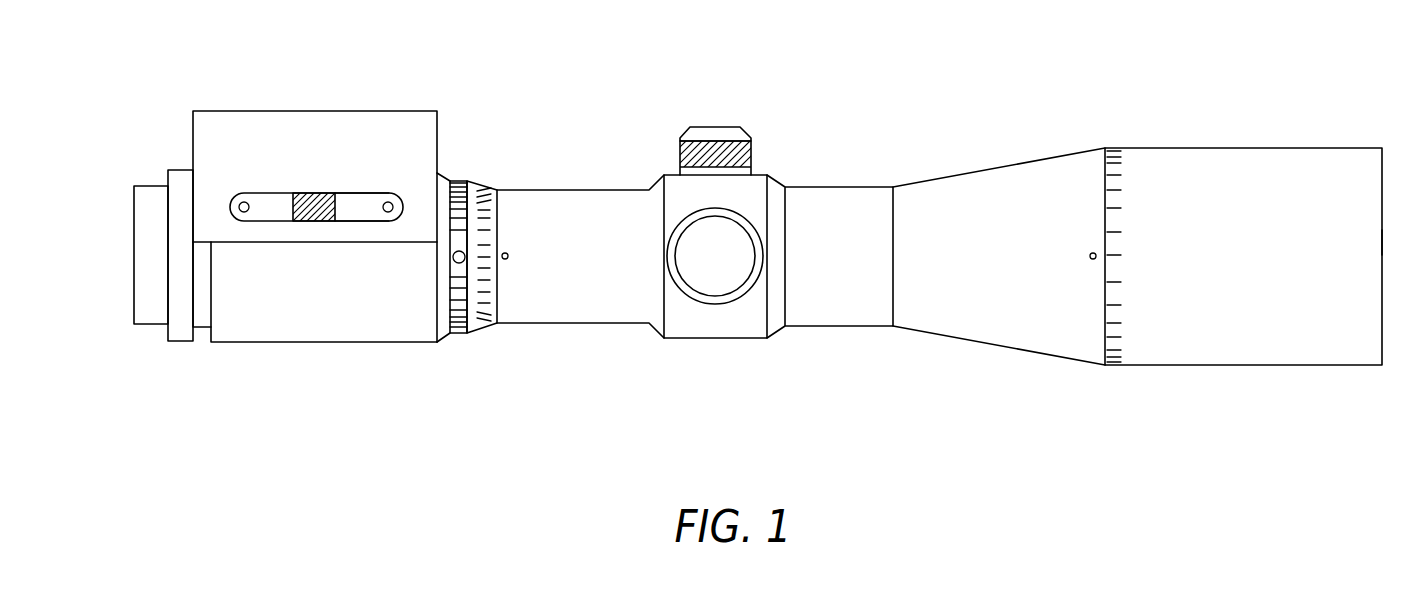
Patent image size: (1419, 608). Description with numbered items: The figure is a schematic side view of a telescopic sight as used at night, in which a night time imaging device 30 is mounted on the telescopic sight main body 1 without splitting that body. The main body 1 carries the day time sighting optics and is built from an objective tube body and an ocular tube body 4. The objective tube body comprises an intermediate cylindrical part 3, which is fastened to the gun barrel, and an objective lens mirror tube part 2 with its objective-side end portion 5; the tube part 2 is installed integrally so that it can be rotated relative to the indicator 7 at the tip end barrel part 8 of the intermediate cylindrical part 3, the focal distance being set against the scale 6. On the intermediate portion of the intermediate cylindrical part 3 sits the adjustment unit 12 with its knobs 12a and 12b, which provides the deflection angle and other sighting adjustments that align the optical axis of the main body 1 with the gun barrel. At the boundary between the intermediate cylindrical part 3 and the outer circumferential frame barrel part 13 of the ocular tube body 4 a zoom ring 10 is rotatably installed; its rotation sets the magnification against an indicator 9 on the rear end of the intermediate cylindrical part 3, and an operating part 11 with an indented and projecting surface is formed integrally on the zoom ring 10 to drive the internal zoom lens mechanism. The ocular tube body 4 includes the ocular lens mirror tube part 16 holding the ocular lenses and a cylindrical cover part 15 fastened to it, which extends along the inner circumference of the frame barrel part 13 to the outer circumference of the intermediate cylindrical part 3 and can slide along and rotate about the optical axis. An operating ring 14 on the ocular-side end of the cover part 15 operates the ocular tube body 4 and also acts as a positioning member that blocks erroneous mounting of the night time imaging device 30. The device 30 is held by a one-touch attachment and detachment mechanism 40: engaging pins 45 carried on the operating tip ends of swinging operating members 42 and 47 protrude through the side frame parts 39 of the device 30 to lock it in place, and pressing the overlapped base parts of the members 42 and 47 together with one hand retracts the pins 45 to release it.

The telescopic sight main body 1 is at (842, 132).
The objective lens mirror tube part 2 is at (1272, 148).
The intermediate cylindrical part 3 is at (563, 190).
The ocular tube body 4 is at (140, 162).
The objective end 5 is at (1382, 242).
The scale 6 is at (1107, 232).
The indicator 7 is at (1092, 259).
The tip end barrel part 8 is at (990, 169).
The indicator 9 is at (505, 259).
The zoom ring 10 is at (478, 324).
The operating part 11 is at (453, 180).
The adjustment turret 12 is at (748, 338).
The elevation adjustment knob 12a is at (717, 127).
The windage adjustment knob 12b is at (710, 298).
The outer circumferential frame barrel part 13 is at (320, 342).
The operating ring 14 is at (180, 341).
The cylindrical cover part 15 is at (207, 312).
The ocular lens mirror tube part 16 is at (142, 324).
The night time imaging device 30 is at (307, 111).
The side frame parts 39 is at (330, 234).
The one-touch attachment and detachment mechanism 40 is at (323, 197).
The operating member 42 is at (360, 202).
The engaging pins 45 is at (247, 200).
The operating member 47 is at (270, 200).